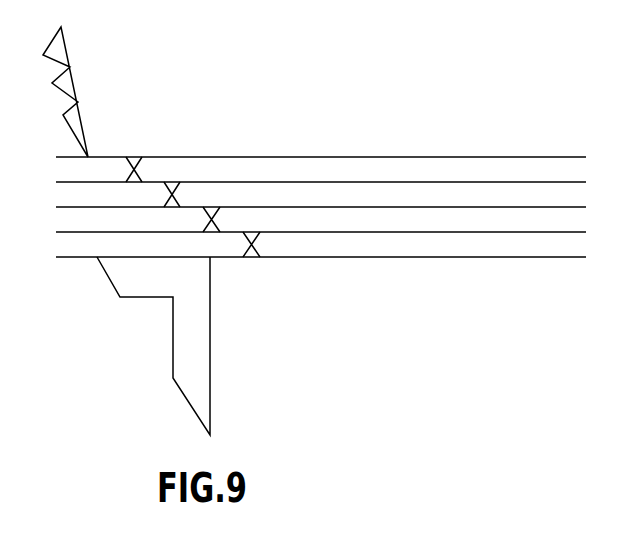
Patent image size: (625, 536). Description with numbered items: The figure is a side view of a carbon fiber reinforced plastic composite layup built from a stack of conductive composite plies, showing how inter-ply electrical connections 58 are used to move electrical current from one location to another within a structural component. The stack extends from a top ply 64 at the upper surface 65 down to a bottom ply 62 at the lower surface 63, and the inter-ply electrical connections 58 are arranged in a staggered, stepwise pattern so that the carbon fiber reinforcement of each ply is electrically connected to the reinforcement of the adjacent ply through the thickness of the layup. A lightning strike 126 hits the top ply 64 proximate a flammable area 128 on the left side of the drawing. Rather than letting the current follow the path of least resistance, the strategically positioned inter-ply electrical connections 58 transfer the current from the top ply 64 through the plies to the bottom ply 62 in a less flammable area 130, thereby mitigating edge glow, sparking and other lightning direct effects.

The inter-ply electrical connections 58 is at (180, 190).
The bottom ply 62 is at (493, 247).
The lower surface 63 is at (423, 257).
The top ply 64 is at (373, 161).
The upper surface 65 is at (530, 157).
The lightning strike 126 is at (62, 50).
The flammable area 128 is at (127, 357).
The less flammable area 130 is at (322, 370).